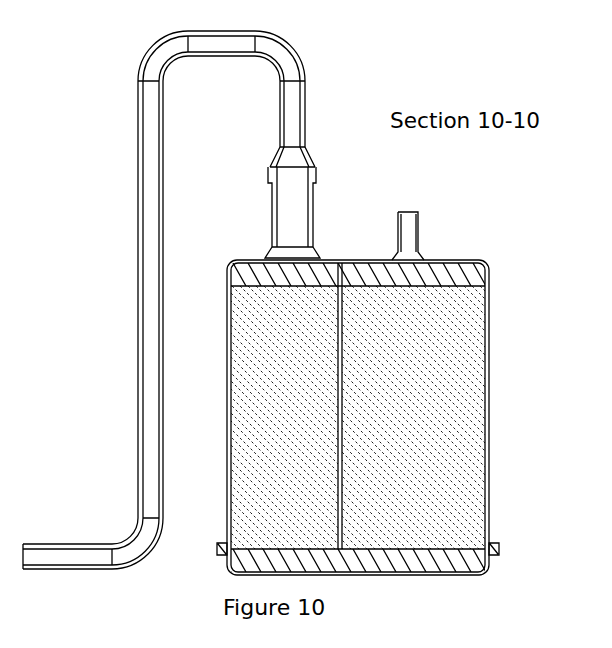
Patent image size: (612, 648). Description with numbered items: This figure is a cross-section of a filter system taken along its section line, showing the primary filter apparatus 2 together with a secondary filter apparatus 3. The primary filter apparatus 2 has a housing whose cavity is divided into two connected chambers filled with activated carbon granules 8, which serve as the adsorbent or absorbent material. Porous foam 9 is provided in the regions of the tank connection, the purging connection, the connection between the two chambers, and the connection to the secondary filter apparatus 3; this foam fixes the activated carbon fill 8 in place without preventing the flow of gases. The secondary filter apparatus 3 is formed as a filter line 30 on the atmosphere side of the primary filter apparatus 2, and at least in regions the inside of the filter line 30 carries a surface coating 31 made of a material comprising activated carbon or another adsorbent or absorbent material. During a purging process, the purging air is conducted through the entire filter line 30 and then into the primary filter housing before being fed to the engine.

The primary filter apparatus 2 is at (227, 386).
The secondary filter apparatus 3 is at (137, 106).
The activated carbon granules 8 is at (443, 437).
The porous foam 9 is at (477, 277).
The filter line 30 is at (290, 101).
The surface coating 31 is at (159, 296).